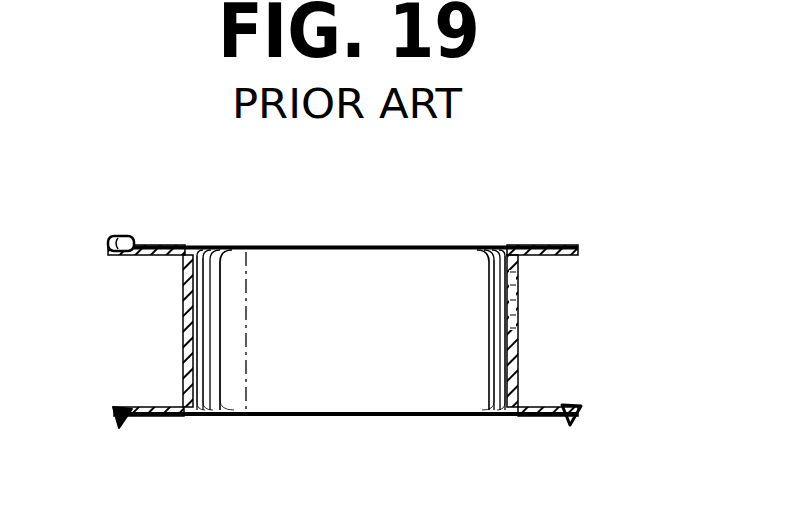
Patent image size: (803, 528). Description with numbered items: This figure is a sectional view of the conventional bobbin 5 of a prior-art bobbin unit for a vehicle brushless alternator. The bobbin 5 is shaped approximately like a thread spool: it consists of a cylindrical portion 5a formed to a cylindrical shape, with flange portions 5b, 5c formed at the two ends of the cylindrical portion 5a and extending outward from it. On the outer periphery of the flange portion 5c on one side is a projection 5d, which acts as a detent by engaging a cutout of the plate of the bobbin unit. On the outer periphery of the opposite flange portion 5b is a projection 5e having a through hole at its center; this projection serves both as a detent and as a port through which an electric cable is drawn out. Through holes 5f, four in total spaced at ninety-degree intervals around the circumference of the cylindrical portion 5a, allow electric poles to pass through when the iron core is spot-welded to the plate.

The bobbin 5 is at (379, 319).
The cylindrical portion 5a is at (519, 356).
The flange portion 5b is at (547, 245).
The flange portion 5c is at (543, 417).
The projection 5d is at (121, 424).
The projection 5e is at (134, 242).
The through hole 5f is at (519, 291).